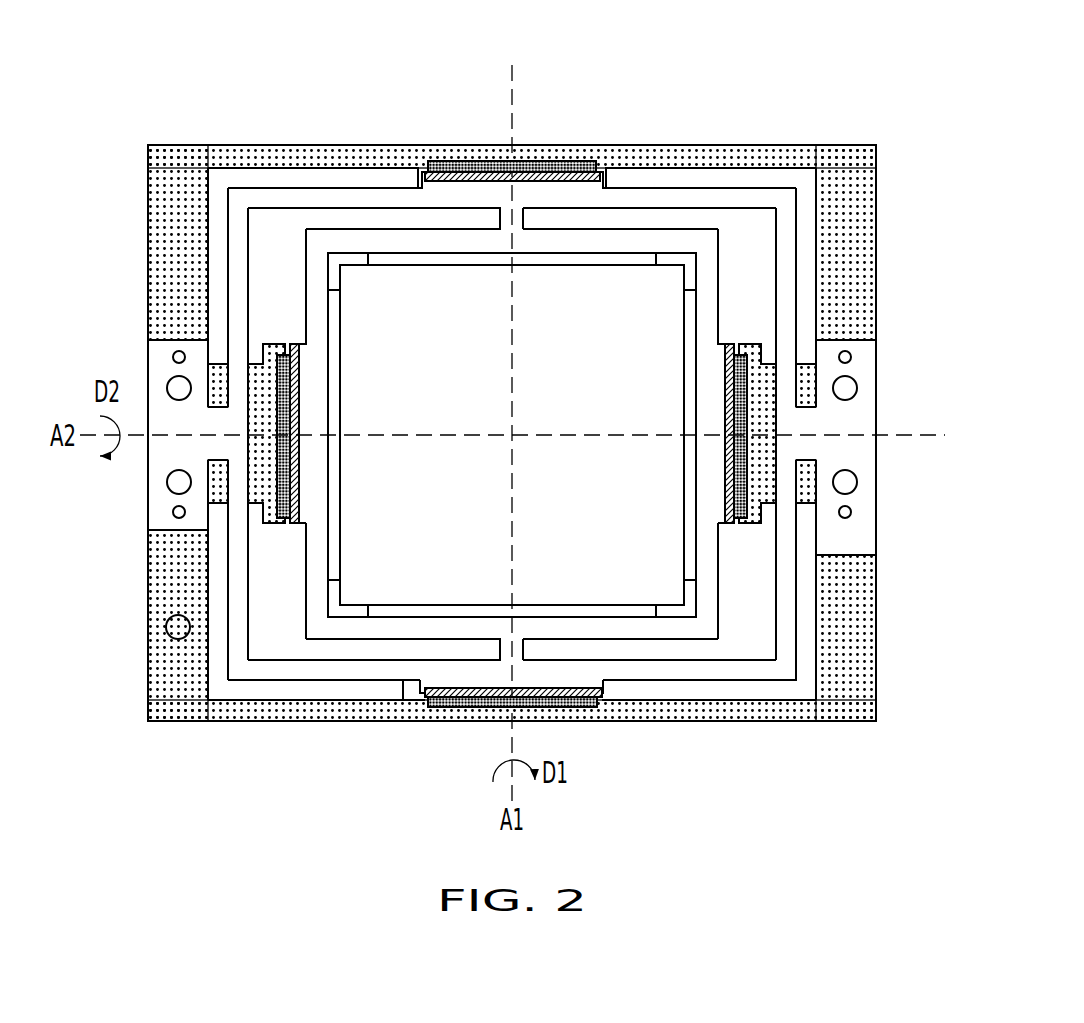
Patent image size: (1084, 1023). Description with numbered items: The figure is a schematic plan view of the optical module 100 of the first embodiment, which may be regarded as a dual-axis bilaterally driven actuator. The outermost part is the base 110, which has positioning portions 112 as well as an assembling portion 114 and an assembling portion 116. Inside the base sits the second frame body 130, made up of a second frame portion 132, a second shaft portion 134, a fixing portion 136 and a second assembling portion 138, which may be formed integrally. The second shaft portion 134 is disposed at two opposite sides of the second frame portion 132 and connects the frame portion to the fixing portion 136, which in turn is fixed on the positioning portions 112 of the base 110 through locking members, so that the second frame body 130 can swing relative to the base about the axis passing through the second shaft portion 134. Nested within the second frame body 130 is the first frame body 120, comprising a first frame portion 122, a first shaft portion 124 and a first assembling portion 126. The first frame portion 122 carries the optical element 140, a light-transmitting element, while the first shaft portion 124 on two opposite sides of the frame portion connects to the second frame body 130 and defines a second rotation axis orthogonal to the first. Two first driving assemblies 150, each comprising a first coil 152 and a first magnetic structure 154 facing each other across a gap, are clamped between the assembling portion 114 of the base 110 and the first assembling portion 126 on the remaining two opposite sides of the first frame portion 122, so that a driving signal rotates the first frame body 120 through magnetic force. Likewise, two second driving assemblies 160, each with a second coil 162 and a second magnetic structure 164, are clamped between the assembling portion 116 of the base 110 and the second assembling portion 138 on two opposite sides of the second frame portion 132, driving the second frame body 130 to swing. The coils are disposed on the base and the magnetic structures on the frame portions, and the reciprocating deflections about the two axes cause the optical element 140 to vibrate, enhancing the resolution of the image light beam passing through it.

The optical module 100 is at (917, 841).
The base 110 is at (182, 693).
The positioning portion 112 is at (165, 488).
The assembling portion 114 is at (756, 512).
The assembling portion 116 is at (430, 713).
The first frame body 120 is at (638, 100).
The first frame portion 122 is at (569, 414).
The first shaft portion 124 is at (523, 221).
The first assembling portion 126 is at (724, 345).
The second frame body 130 is at (615, 767).
The second frame portion 132 is at (527, 401).
The second shaft portion 134 is at (807, 453).
The fixing portion 136 is at (847, 543).
The second assembling portion 138 is at (600, 682).
The optical element 140 is at (650, 302).
The first driving assembly 150 is at (97, 582).
The first coil 152 is at (283, 522).
The first magnetic structure 154 is at (292, 525).
The second driving assembly 160 is at (368, 88).
The second coil 162 is at (436, 163).
The second magnetic structure 164 is at (448, 170).